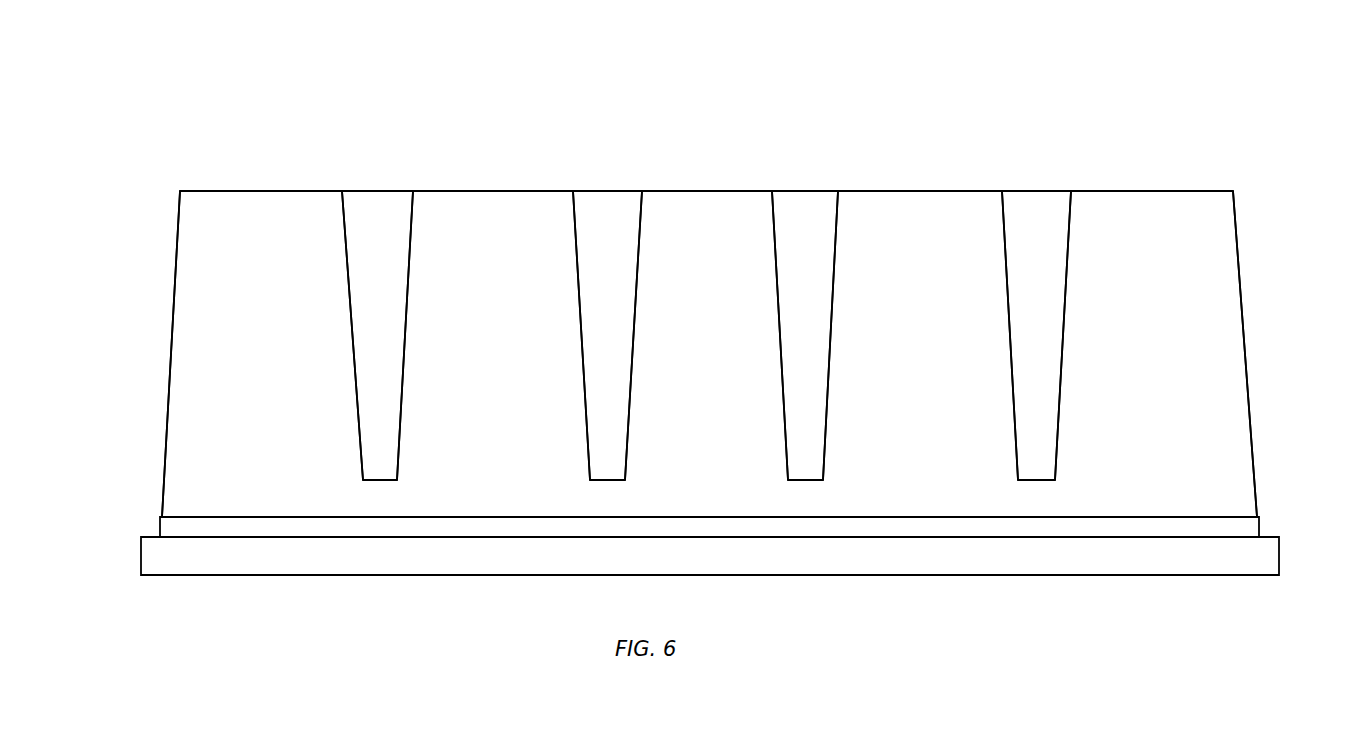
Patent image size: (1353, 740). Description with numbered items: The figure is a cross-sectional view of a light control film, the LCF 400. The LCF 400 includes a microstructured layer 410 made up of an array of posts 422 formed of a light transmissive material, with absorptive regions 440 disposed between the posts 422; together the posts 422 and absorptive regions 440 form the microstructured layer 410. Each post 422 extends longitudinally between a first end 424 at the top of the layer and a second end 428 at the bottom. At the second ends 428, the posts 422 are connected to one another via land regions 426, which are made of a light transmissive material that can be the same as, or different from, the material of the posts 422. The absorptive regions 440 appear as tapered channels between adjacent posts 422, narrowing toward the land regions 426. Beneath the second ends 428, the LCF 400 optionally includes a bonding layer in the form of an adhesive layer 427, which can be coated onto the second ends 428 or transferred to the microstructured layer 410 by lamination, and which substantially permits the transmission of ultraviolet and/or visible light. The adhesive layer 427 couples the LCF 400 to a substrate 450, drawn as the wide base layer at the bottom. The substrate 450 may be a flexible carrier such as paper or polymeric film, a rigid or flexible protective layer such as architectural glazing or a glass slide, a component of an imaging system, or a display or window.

The LCF 400 is at (1175, 52).
The microstructured layer 410 is at (1240, 256).
The first end 424 is at (250, 190).
The absorptive regions 440 is at (399, 232).
The land regions 426 is at (401, 509).
The posts 422 is at (285, 357).
The second end 428 is at (190, 516).
The adhesive layer 427 is at (1252, 527).
The substrate 450 is at (725, 568).